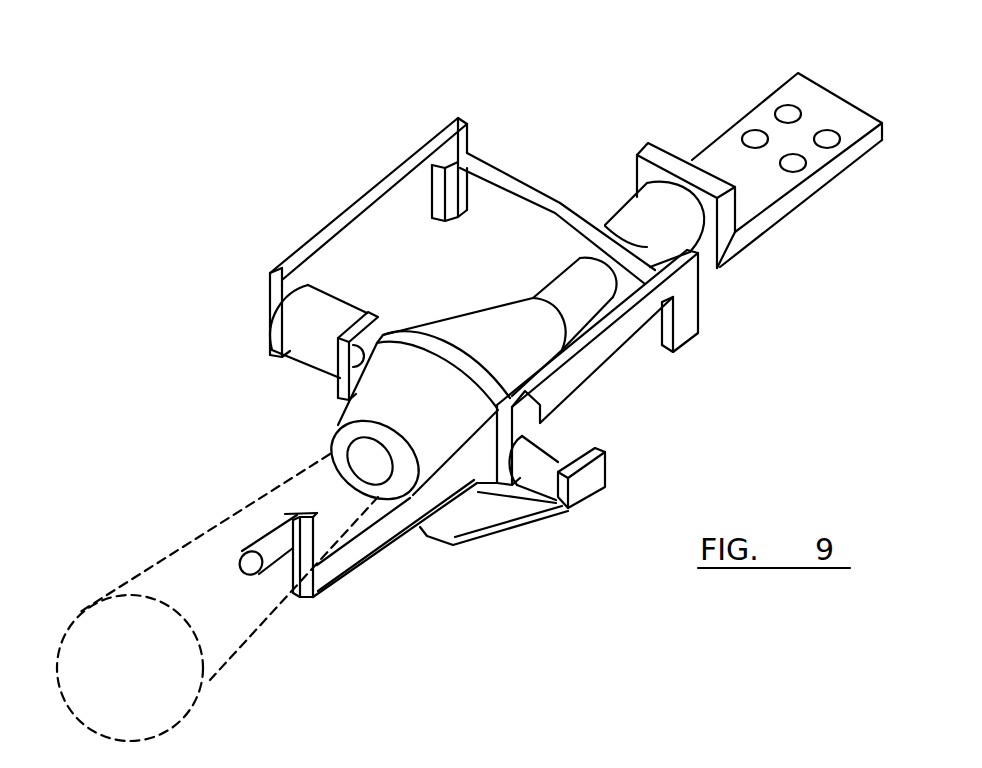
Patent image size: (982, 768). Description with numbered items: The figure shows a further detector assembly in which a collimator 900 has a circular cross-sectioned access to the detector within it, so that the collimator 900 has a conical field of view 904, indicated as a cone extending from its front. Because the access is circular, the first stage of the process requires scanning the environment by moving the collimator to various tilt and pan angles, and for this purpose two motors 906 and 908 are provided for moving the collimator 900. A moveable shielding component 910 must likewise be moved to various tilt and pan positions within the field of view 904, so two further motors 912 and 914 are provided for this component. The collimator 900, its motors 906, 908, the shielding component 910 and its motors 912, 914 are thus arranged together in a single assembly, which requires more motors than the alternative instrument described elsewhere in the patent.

The collimator 900 is at (330, 438).
The conical field of view 904 is at (150, 683).
The motor 906 is at (308, 304).
The motor 908 is at (640, 206).
The moveable shielding component 910 is at (254, 536).
The motor 912 is at (459, 525).
The motor 914 is at (537, 480).